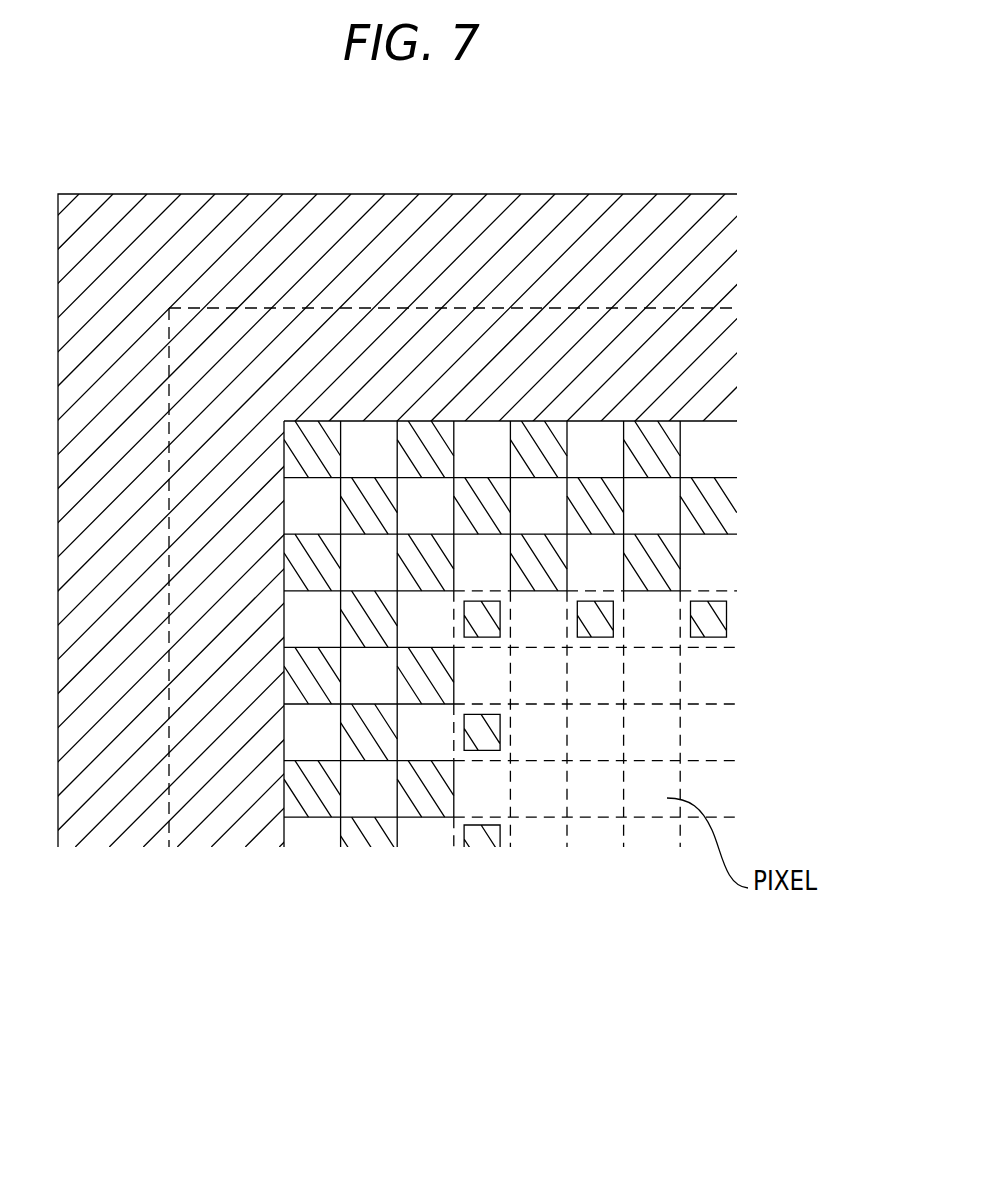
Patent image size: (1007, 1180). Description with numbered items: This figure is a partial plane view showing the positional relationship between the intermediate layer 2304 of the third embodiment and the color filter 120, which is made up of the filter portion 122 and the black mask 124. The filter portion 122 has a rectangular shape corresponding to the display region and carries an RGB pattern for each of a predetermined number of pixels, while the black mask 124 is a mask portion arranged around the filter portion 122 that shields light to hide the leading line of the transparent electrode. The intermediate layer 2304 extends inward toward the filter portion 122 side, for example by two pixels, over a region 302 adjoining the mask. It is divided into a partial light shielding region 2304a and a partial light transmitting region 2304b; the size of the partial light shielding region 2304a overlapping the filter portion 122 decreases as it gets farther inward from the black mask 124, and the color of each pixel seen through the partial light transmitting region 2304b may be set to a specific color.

The light-blocking region 302 is at (284, 858).
The black mask 124 is at (748, 308).
The filter portion 122 is at (748, 538).
The color filter 120 is at (662, 863).
The intermediate layer 2304 is at (284, 860).
The partial light shielding region 2304a is at (313, 808).
The partial light transmitting region 2304b is at (486, 798).